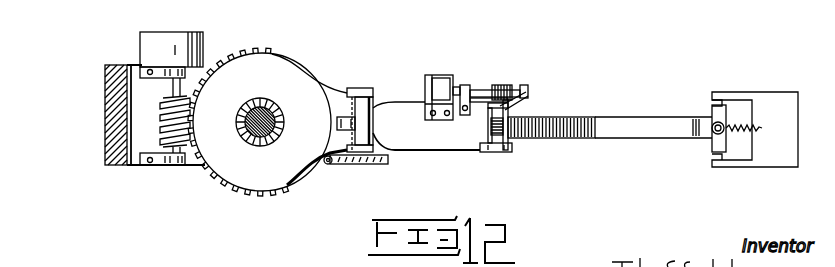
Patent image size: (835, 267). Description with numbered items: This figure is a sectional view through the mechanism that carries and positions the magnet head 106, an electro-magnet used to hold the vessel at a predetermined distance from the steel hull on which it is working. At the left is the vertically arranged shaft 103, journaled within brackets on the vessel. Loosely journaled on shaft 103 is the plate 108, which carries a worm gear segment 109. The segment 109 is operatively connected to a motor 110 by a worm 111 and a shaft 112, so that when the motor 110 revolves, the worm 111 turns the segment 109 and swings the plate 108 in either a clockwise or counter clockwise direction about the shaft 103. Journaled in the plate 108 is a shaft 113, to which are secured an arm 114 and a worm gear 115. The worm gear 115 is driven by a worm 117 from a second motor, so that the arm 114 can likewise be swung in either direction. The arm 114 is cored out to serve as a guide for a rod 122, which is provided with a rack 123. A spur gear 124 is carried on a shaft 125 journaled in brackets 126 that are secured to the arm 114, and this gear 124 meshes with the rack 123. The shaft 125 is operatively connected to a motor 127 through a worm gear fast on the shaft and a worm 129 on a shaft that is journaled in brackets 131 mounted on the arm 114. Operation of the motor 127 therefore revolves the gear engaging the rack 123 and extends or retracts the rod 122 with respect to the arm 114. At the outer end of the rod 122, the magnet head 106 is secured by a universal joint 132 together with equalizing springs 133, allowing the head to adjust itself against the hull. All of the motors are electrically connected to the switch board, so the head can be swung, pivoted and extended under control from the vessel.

The shaft 103 is at (262, 135).
The magnet head 106 is at (795, 92).
The plate 108 is at (290, 104).
The worm gear segment 109 is at (232, 80).
The motor 110 is at (205, 32).
The worm 111 is at (175, 116).
The shaft 112 is at (175, 88).
The shaft 113 is at (373, 92).
The arm 114 is at (433, 140).
The worm gear 115 is at (368, 165).
The worm 117 is at (327, 165).
The rod 122 is at (640, 125).
The rack 123 is at (583, 113).
The spur gear 124 is at (530, 114).
The shaft 125 is at (508, 140).
The brackets 126 is at (495, 152).
The motor 127 is at (443, 85).
The worm 129 is at (500, 87).
The brackets 131 is at (467, 90).
The universal joint 132 is at (712, 115).
The equalizing springs 133 is at (742, 123).